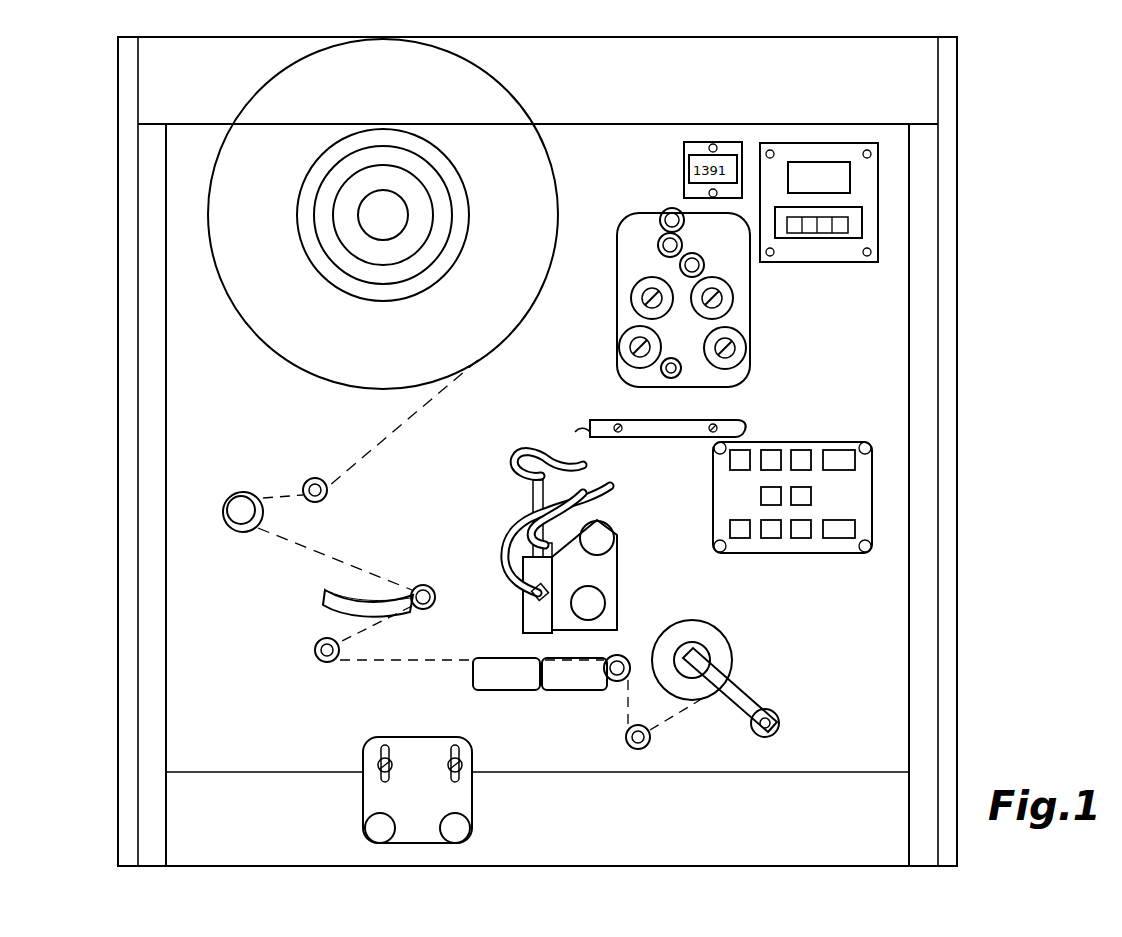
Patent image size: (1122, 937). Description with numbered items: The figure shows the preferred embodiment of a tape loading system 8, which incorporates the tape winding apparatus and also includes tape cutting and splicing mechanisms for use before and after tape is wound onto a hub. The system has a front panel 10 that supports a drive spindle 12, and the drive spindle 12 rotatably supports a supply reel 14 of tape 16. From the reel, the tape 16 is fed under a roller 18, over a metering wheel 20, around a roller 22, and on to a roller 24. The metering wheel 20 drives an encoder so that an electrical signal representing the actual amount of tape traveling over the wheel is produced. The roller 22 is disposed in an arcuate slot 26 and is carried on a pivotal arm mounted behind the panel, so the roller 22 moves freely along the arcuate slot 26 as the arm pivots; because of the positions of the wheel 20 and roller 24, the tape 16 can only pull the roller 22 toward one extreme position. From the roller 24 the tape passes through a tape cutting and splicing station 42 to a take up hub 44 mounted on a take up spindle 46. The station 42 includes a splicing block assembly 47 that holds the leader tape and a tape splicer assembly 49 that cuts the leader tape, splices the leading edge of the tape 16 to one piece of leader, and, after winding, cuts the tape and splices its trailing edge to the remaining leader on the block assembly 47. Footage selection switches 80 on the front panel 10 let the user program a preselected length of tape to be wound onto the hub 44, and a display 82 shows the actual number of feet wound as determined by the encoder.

The tape loading system 8 is at (116, 176).
The front panel 10 is at (893, 308).
The drive spindle 12 is at (397, 220).
The supply reel 14 is at (559, 209).
The tape 16 is at (403, 430).
The roller 18 is at (320, 478).
The metering wheel 20 is at (243, 492).
The roller 22 is at (428, 585).
The roller 24 is at (340, 648).
The arcuate slot 26 is at (338, 598).
The tape cutting and splicing station 42 is at (603, 645).
The take up hub 44 is at (727, 652).
The take up spindle 46 is at (700, 650).
The splicing block assembly 47 is at (517, 684).
The tape splicer assembly 49 is at (610, 566).
The footage selection switches 80 is at (852, 222).
The display 82 is at (850, 172).